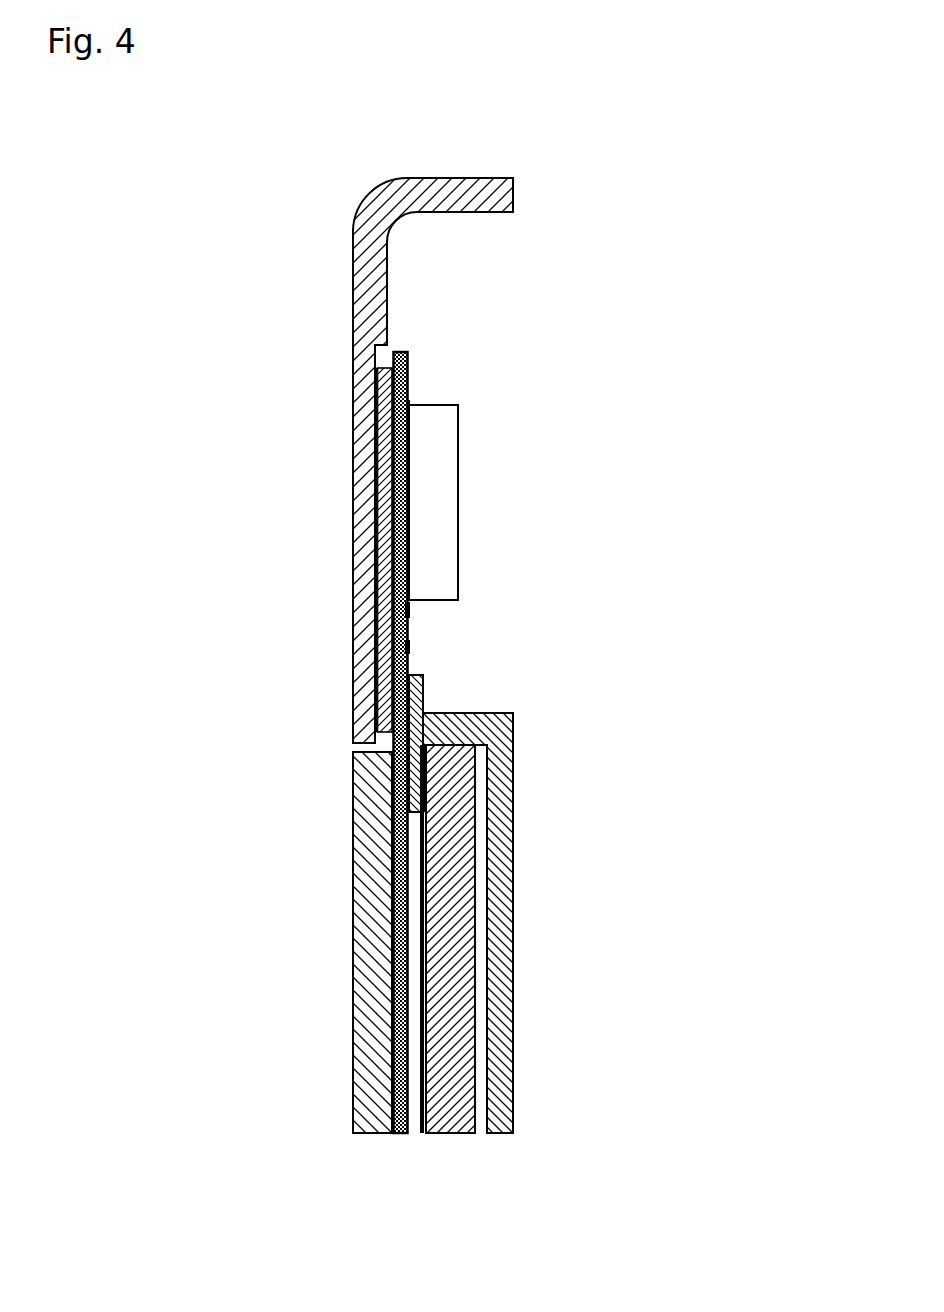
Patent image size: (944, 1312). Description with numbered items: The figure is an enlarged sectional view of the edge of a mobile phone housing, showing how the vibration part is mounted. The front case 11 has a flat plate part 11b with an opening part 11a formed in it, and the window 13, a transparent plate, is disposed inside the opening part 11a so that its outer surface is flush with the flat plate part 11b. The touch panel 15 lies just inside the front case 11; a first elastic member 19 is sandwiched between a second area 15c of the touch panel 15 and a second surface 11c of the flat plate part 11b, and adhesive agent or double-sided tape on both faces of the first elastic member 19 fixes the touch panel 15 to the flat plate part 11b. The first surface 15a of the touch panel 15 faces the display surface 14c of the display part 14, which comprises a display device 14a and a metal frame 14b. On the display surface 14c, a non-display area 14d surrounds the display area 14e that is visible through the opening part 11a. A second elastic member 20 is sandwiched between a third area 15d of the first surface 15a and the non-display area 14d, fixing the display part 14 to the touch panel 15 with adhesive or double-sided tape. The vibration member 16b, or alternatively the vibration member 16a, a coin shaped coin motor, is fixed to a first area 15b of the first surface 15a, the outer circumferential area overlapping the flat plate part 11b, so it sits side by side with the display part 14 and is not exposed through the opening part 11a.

The front case 11 is at (468, 186).
The opening part 11a is at (364, 748).
The flat plate part 11b is at (290, 222).
The second surface 11c is at (375, 368).
The window 13 is at (353, 997).
The display part 14 is at (620, 750).
The display device 14a is at (470, 765).
The metal frame 14b is at (503, 790).
The display surface 14c is at (569, 805).
The non-display area 14d is at (424, 800).
The display area 14e is at (425, 828).
The touch panel 15 is at (409, 352).
The first surface 15a is at (512, 612).
The first area 15b is at (410, 610).
The second area 15c is at (397, 403).
The third area 15d is at (410, 645).
The vibration member 16a is at (458, 440).
The vibration member 16b is at (484, 502).
The first elastic member 19 is at (384, 366).
The second elastic member 20 is at (424, 690).